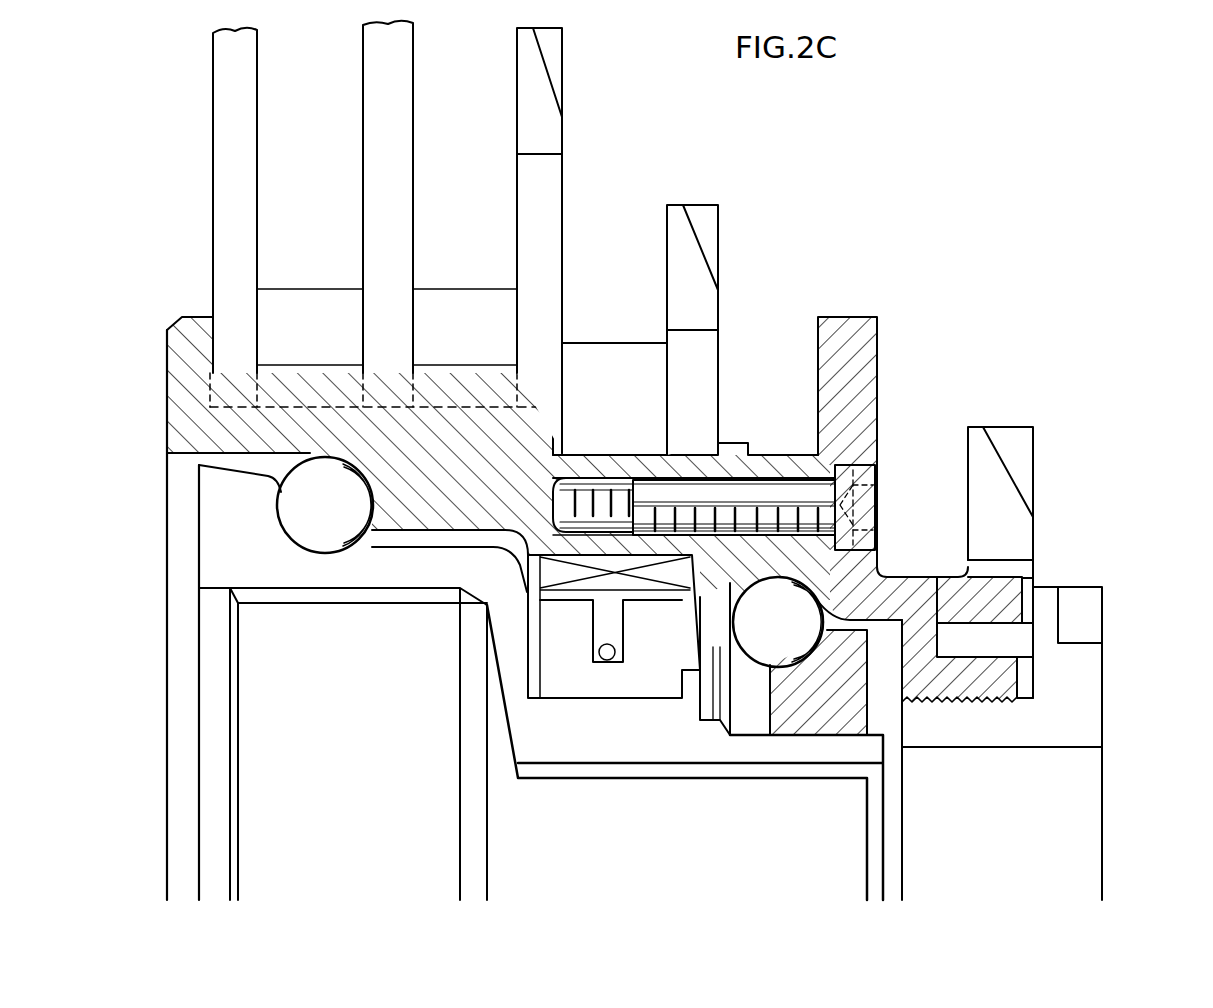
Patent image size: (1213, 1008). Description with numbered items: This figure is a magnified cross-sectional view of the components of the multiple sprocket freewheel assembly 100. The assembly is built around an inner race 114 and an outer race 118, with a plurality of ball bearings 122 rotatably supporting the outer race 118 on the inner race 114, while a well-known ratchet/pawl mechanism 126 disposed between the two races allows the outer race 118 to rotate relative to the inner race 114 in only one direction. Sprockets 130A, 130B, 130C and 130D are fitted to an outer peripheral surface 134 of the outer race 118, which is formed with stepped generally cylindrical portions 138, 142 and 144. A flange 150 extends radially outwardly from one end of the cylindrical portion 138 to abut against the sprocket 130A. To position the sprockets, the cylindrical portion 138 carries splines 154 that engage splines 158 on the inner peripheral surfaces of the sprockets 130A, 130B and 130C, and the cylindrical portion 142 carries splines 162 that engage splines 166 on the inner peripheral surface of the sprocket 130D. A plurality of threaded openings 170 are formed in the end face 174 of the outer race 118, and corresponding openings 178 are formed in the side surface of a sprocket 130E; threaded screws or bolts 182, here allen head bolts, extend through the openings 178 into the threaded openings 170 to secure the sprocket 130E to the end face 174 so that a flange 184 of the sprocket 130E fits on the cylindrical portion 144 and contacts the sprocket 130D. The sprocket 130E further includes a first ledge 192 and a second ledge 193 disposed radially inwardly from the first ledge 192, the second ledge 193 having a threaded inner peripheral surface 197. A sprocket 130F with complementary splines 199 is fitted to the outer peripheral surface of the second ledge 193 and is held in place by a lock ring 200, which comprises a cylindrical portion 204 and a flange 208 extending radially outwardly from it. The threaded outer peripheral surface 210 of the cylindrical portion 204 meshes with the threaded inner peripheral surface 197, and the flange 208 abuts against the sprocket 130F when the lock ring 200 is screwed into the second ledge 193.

The multiple sprocket freewheel assembly 100 is at (103, 230).
The inner race 114 is at (260, 561).
The outer race 118 is at (501, 444).
The ball bearings 122 is at (345, 528).
The ratchet/pawl mechanism 126 is at (600, 707).
The sprocket 130A is at (213, 97).
The sprocket 130B is at (363, 97).
The sprocket 130C is at (517, 96).
The sprocket 130D is at (706, 215).
The sprocket 130E is at (850, 313).
The sprocket 130F is at (1028, 435).
The outer peripheral surface 134 is at (575, 450).
The cylindrical portion 138 is at (437, 507).
The cylindrical portion 142 is at (612, 557).
The cylindrical portion 144 is at (727, 600).
The flange 150 is at (182, 317).
The splines 154 is at (377, 383).
The splines 158 is at (270, 388).
The splines 162 is at (633, 472).
The splines 166 is at (670, 478).
The threaded openings 170 is at (680, 530).
The end face 174 is at (706, 475).
The openings 178 is at (792, 480).
The threaded screws or bolts 182 is at (870, 477).
The flange 184 is at (756, 453).
The first ledge 192 is at (920, 577).
The second ledge 193 is at (987, 657).
The inner peripheral surface 197 is at (955, 690).
The complementary splines 199 is at (963, 640).
The lock ring 200 is at (1110, 618).
The cylindrical portion 204 is at (992, 730).
The flange 208 is at (1077, 703).
The outer peripheral surface 210 is at (1010, 703).